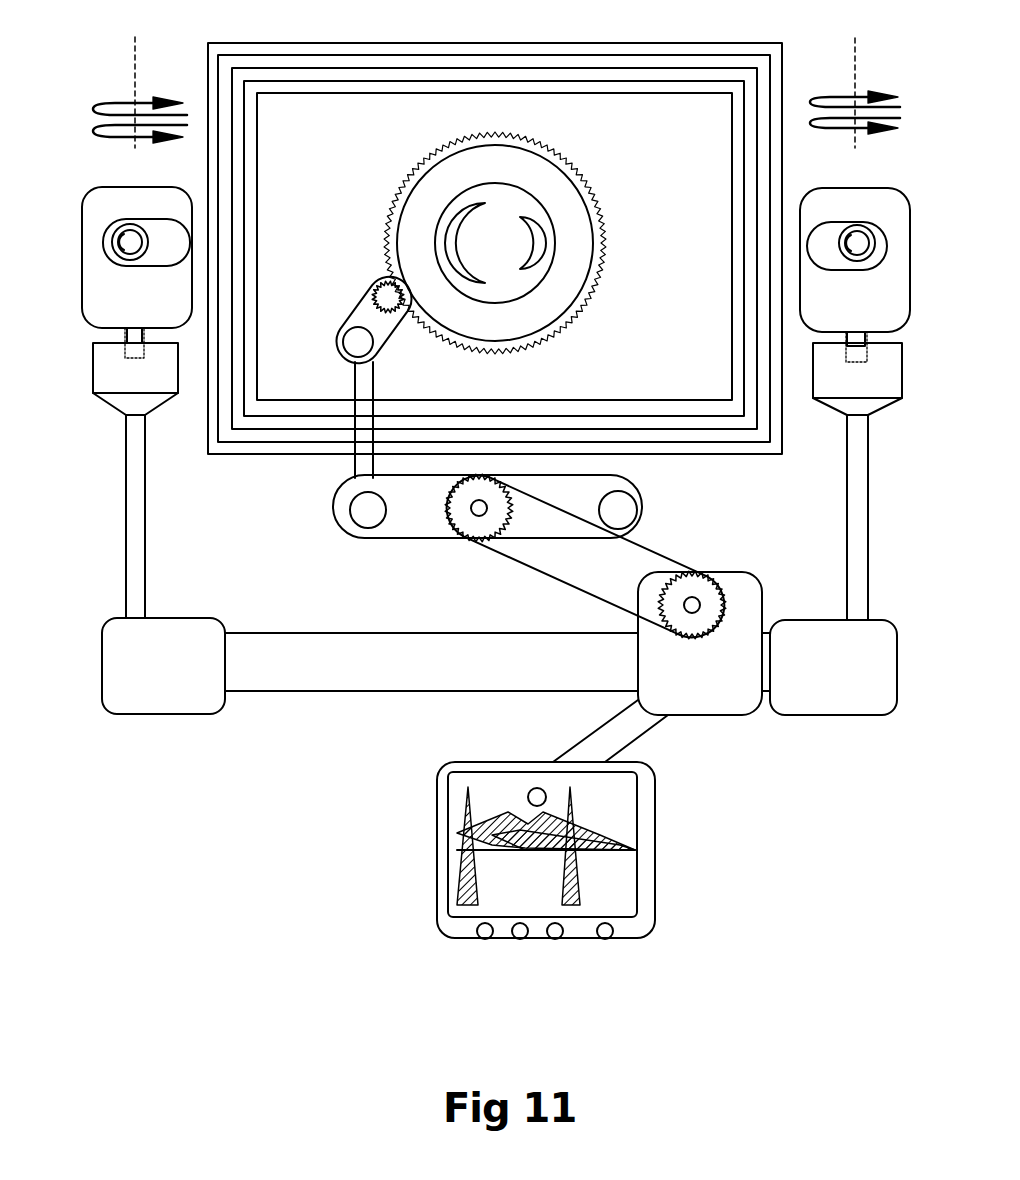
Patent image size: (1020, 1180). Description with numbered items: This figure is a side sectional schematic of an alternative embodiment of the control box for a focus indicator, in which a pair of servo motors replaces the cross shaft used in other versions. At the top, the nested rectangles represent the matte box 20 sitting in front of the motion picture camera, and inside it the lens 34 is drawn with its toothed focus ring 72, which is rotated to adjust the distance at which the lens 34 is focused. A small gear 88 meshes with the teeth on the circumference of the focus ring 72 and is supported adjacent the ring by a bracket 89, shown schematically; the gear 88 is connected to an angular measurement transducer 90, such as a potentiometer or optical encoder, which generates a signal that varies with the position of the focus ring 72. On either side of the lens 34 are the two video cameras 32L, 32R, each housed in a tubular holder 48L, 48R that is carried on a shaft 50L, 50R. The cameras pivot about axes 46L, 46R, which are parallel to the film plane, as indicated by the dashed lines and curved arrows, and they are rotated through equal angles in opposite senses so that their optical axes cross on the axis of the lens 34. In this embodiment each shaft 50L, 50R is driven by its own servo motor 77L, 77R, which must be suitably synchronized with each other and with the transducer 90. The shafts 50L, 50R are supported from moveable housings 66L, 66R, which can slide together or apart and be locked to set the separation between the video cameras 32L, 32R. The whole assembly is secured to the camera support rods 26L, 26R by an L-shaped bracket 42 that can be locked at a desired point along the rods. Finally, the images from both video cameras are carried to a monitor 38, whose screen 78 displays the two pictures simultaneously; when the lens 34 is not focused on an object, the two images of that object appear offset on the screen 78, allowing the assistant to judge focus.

The matte box 20 is at (287, 422).
The lens 34 is at (562, 188).
The focus ring 72 is at (603, 267).
The gear 88 is at (377, 298).
The angular measurement transducer 90 is at (352, 330).
The bracket 89 is at (362, 370).
The axis 46L is at (137, 37).
The axis 46R is at (855, 38).
The tubular holder 48L is at (103, 212).
The tubular holder 48R is at (903, 238).
The video camera 32L is at (170, 243).
The video camera 32R is at (835, 222).
The shaft 50L is at (127, 328).
The shaft 50R is at (852, 333).
The servo motor 77L is at (120, 365).
The servo motor 77R is at (852, 388).
The L-shaped bracket 42 is at (432, 515).
The rod 26L is at (367, 512).
The rod 26R is at (622, 511).
The housing 66L is at (192, 697).
The housing 66R is at (848, 697).
The monitor 38 is at (657, 890).
The screen 78 is at (620, 837).